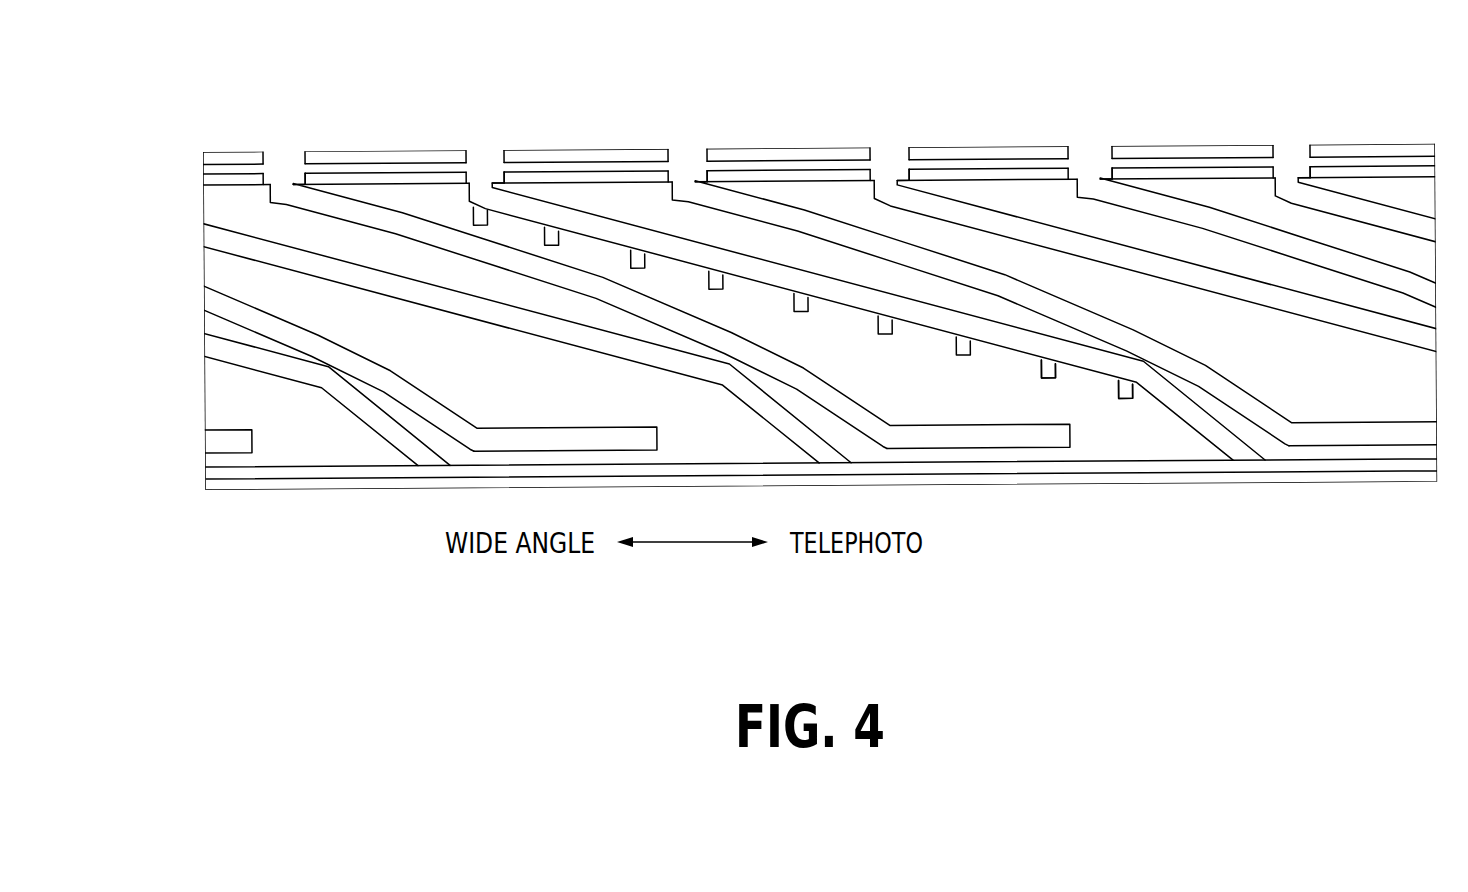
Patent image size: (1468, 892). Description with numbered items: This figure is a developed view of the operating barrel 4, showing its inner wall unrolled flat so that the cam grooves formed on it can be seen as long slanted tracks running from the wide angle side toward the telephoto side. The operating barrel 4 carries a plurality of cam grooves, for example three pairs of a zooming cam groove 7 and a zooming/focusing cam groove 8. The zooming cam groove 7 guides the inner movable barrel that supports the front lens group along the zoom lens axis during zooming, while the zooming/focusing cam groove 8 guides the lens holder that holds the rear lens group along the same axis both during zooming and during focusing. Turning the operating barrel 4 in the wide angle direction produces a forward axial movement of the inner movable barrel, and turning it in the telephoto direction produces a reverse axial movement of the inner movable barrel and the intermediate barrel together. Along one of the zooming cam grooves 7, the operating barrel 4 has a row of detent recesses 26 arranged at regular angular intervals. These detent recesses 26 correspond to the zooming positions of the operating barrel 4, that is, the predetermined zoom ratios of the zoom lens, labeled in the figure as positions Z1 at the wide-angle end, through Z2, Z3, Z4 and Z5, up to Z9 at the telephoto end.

The operating barrel 4 is at (1209, 136).
The zooming cam groove 7 is at (1196, 424).
The zooming/focusing cam groove 8 is at (1312, 430).
The detent recess 26 is at (1036, 366).
The zooming position z1 Z1 is at (1127, 409).
The zooming position z2 Z2 is at (1046, 389).
The zooming position z3 Z3 is at (964, 367).
The zooming position z4 Z4 is at (884, 344).
The zooming position z5 Z5 is at (802, 323).
The zooming position z9 Z9 is at (576, 239).